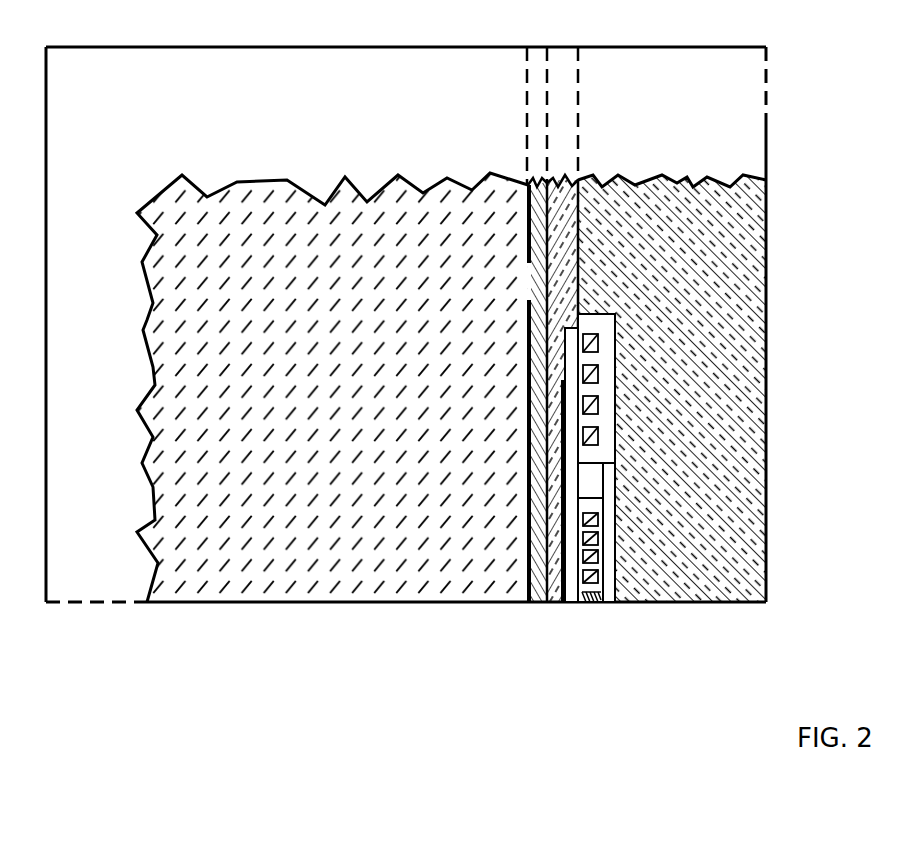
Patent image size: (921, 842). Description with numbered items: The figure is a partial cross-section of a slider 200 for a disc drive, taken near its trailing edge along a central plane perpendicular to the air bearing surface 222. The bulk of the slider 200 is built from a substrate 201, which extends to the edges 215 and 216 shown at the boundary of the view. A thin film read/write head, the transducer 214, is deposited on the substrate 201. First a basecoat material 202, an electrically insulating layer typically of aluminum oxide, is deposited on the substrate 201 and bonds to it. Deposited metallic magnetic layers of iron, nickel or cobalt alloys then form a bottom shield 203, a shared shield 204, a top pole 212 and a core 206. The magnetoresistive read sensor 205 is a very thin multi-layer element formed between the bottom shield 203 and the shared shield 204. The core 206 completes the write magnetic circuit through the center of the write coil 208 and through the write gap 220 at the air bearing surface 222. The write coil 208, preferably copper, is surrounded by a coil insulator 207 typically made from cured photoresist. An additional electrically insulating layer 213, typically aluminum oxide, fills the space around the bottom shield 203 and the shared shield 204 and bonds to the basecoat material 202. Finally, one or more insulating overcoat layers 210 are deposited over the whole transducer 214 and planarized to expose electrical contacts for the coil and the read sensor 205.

The slider 200 is at (834, 121).
The substrate 201 is at (337, 408).
The basecoat material 202 is at (538, 185).
The bottom shield 203 is at (555, 603).
The shared shield 204 is at (568, 604).
The magnetoresistive read sensor 205 is at (563, 628).
The core 206 is at (595, 486).
The coil insulator 207 is at (603, 325).
The write coil 208 is at (590, 408).
The overcoat layer 210 is at (662, 176).
The top pole 212 is at (608, 604).
The electrically insulating layer 213 is at (559, 186).
The transducer 214 is at (523, 279).
The edge 215 is at (105, 47).
The edge 216 is at (47, 138).
The write gap 220 is at (592, 622).
The air bearing surface 222 is at (333, 603).